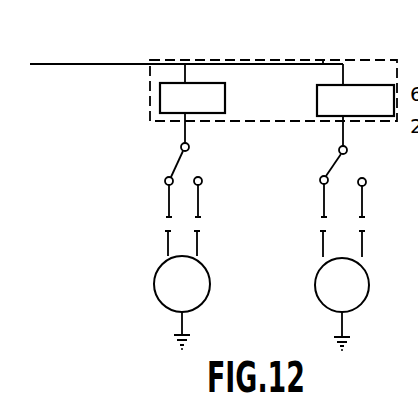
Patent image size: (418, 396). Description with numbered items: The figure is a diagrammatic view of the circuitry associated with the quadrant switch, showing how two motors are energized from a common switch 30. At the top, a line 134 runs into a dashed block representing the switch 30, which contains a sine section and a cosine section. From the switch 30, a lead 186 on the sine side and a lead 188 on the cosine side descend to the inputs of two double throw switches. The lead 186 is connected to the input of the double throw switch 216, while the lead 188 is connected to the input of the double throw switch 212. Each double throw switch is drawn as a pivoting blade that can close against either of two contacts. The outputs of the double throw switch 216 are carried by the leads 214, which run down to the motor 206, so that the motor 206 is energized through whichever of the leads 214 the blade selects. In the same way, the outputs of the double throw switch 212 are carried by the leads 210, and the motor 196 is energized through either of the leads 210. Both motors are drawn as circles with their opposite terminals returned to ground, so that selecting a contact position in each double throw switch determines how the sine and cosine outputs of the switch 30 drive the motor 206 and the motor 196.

The switch 30 is at (178, 60).
The input line 134 is at (107, 66).
The lead 186 is at (184, 125).
The lead 188 is at (341, 129).
The double throw switch 216 is at (162, 162).
The double throw switch 212 is at (315, 160).
The leads 214 is at (198, 198).
The leads 210 is at (362, 198).
The motor 206 is at (200, 297).
The motor 196 is at (354, 297).